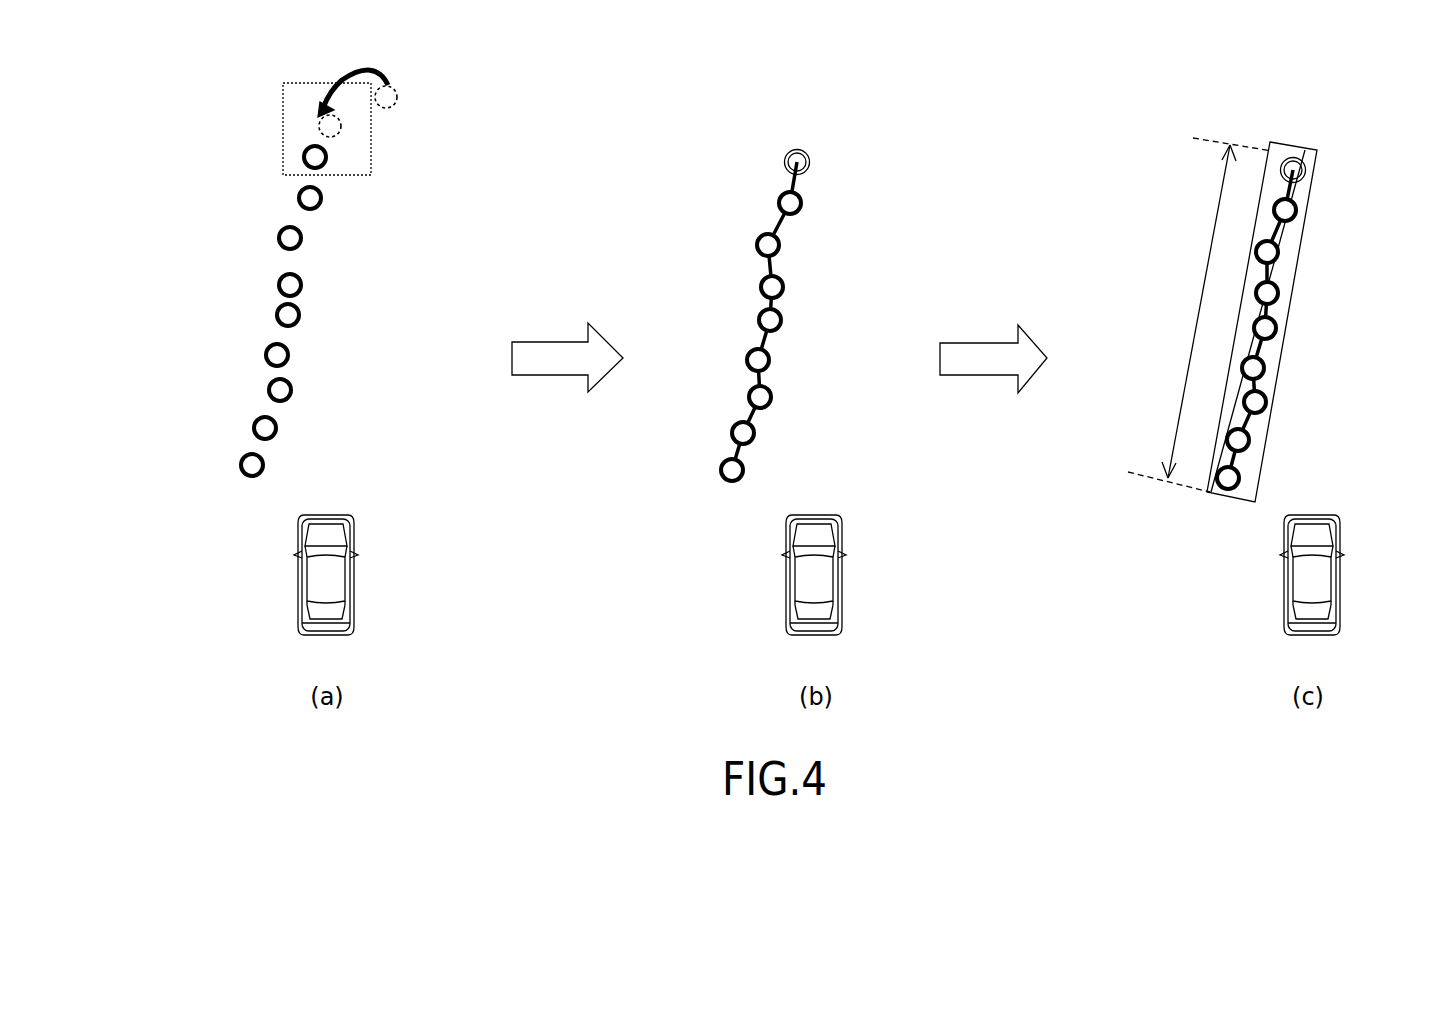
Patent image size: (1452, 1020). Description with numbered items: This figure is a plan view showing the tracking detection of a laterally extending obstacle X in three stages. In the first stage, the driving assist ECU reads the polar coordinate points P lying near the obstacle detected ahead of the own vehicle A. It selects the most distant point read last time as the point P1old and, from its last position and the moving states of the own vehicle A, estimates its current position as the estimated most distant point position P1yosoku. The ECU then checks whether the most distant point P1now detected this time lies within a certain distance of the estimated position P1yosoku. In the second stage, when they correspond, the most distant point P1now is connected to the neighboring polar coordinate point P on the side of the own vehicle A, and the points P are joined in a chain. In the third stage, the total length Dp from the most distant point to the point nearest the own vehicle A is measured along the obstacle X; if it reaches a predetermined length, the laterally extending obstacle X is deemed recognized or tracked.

The polar coordinate point P is at (280, 236).
The most distant point P1now is at (1342, 158).
The polar coordinate point Pold P1old is at (398, 97).
The estimated most distant point position P1yosoku is at (316, 125).
The own vehicle A is at (354, 577).
The laterally extending obstacle X is at (1300, 272).
The total length Dp is at (1200, 315).